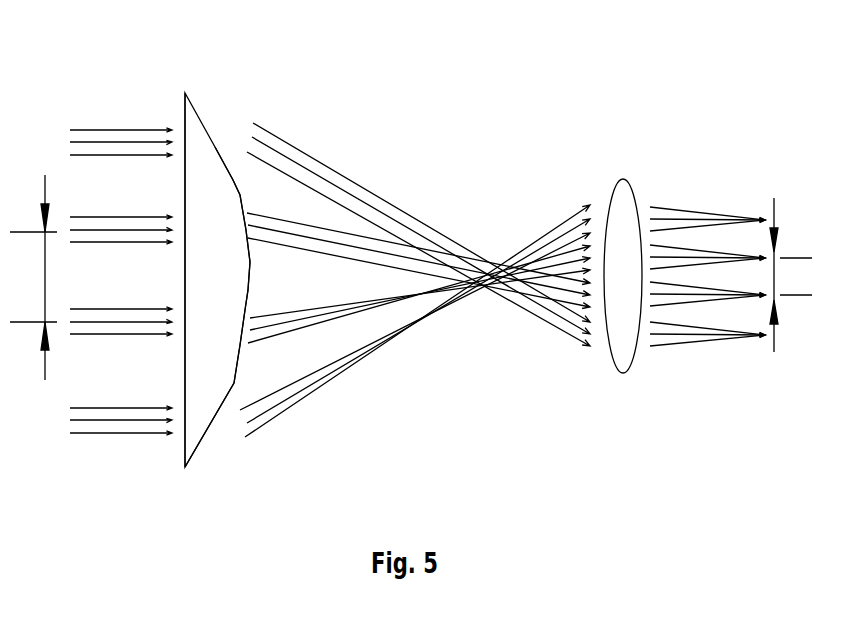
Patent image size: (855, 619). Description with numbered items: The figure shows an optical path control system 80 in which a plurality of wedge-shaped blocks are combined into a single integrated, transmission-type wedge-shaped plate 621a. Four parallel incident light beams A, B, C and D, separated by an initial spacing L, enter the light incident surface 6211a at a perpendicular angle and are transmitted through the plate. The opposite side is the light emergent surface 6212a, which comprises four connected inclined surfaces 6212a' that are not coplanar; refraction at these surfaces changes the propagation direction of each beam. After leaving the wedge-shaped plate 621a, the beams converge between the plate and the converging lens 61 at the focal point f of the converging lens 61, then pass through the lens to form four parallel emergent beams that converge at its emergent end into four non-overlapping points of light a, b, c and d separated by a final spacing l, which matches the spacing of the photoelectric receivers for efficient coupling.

The optical path control system 80 is at (132, 36).
The wedge-shaped plate 621a is at (198, 133).
The light incident surface 6211a is at (185, 194).
The light emergent surface 6212a is at (232, 443).
The inclined surfaces 6212a' is at (264, 242).
The converging lens 61 is at (630, 186).